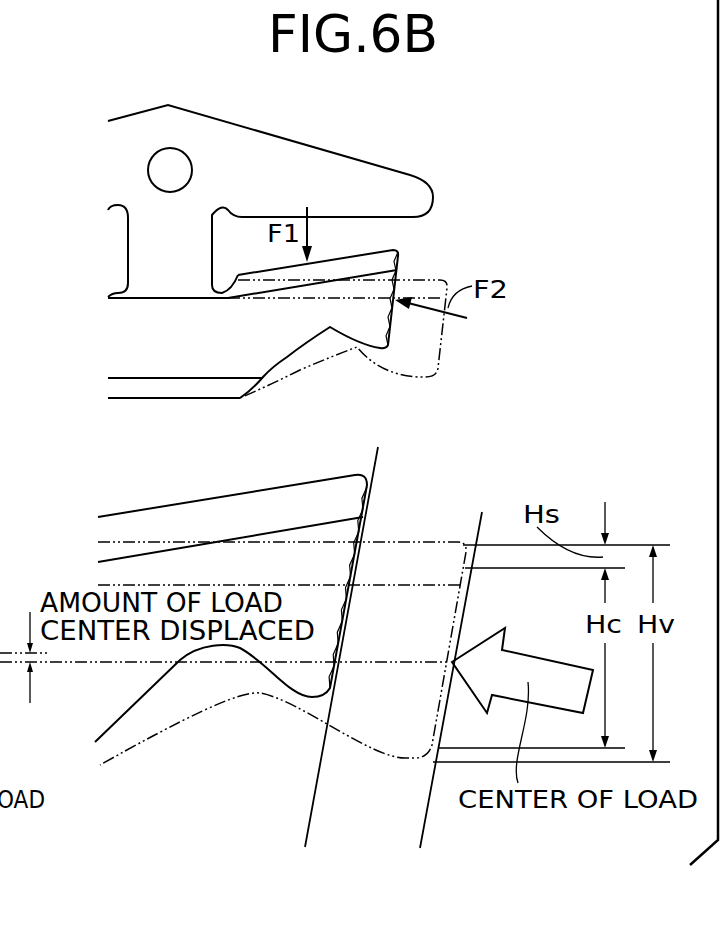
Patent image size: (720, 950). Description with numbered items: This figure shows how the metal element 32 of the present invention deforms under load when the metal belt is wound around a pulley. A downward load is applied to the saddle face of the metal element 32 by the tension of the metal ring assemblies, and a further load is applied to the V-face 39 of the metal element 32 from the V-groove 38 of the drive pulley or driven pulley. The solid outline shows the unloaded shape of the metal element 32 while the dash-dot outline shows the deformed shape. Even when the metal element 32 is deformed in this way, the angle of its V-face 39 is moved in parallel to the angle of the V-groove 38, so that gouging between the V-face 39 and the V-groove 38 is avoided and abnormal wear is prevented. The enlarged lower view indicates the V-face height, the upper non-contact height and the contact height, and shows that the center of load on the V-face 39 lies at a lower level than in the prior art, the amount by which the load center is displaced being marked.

The metal element 32 is at (347, 149).
The V-face 39 is at (400, 273).
The V-groove 38 is at (317, 780).